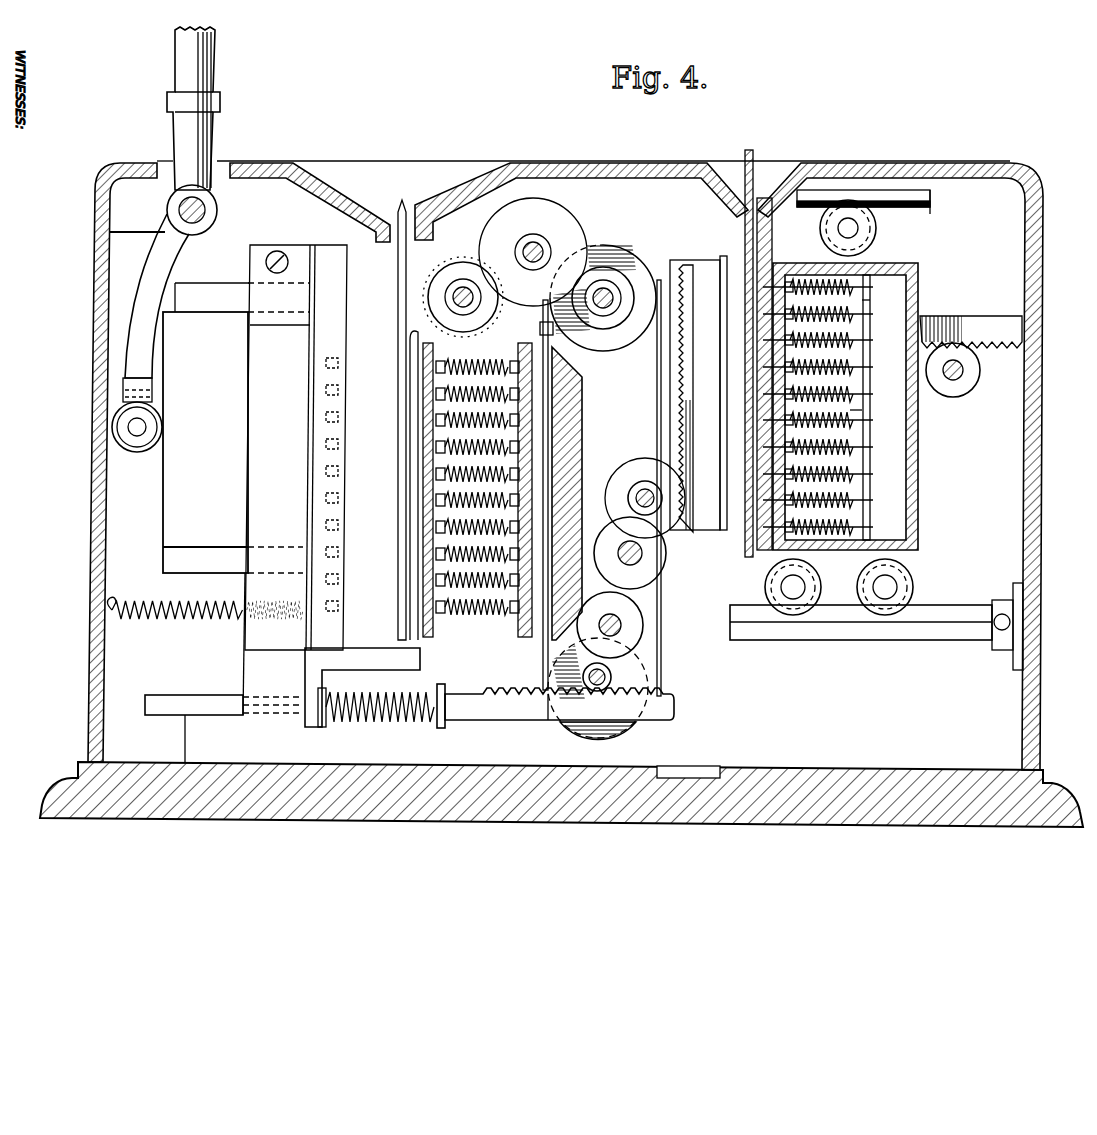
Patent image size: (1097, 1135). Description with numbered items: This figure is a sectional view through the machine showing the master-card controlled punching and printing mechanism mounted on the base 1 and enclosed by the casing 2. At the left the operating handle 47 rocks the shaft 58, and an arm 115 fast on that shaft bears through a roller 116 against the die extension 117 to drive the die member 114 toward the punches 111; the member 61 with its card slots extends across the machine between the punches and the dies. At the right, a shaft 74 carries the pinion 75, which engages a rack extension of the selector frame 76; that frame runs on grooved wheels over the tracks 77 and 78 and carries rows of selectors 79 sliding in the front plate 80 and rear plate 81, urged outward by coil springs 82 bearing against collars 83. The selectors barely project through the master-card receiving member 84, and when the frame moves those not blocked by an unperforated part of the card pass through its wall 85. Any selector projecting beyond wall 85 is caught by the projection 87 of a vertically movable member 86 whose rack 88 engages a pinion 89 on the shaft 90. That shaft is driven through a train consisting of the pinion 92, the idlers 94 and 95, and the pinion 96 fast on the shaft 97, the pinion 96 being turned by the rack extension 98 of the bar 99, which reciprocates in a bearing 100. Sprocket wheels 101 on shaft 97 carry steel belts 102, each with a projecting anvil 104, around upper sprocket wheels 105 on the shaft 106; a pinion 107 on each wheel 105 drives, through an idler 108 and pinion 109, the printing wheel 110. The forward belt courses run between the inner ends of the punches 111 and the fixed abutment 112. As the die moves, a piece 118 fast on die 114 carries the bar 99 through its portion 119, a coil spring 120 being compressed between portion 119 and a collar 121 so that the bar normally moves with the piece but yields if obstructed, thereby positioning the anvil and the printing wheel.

The base 1 is at (775, 784).
The casing 2 is at (90, 573).
The operating handle 47 is at (210, 66).
The shaft 58 is at (206, 210).
The member 61 is at (402, 205).
The shaft 74 is at (949, 381).
The pinion 75 is at (975, 373).
The selector frame 76 is at (920, 276).
The track 77 is at (930, 216).
The track 78 is at (862, 628).
The selectors 79 is at (865, 506).
The front plate 80 is at (766, 552).
The rear plate 81 is at (862, 332).
The coil springs 82 is at (856, 416).
The collars 83 is at (786, 276).
The master-card receiving member 84 is at (749, 200).
The wall 85 is at (737, 530).
The vertically movable member 86 is at (706, 296).
The projection 87 is at (731, 274).
The rack 88 is at (683, 408).
The pinion 89 is at (645, 480).
The shaft 90 is at (638, 494).
The pinion 92 is at (641, 494).
The idler 94 is at (640, 566).
The idler 95 is at (630, 627).
The pinion 96 is at (613, 676).
The shaft 97 is at (606, 697).
The rack extension 98 is at (525, 692).
The bar 99 is at (210, 702).
The bearing 100 is at (276, 710).
The sprocket wheels 101 is at (560, 702).
The steel belts 102 is at (657, 367).
The anvil 104 is at (540, 328).
The sprocket wheel 105 is at (620, 284).
The shaft 106 is at (603, 290).
The pinion 107 is at (632, 311).
The idler 108 is at (498, 238).
The pinion 109 is at (430, 285).
The printing wheel 110 is at (428, 305).
The punches 111 is at (425, 506).
The fixed abutment 112 is at (566, 598).
The die member 114 is at (337, 410).
The arm 115 is at (136, 345).
The roller 116 is at (115, 440).
The die extension 117 is at (166, 505).
The piece 118 is at (357, 657).
The portion 119 is at (322, 724).
The coil spring 120 is at (376, 724).
The collar 121 is at (442, 724).